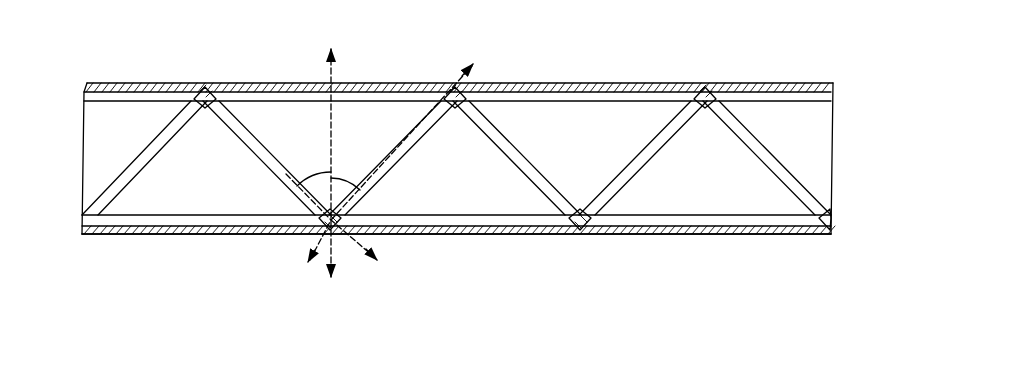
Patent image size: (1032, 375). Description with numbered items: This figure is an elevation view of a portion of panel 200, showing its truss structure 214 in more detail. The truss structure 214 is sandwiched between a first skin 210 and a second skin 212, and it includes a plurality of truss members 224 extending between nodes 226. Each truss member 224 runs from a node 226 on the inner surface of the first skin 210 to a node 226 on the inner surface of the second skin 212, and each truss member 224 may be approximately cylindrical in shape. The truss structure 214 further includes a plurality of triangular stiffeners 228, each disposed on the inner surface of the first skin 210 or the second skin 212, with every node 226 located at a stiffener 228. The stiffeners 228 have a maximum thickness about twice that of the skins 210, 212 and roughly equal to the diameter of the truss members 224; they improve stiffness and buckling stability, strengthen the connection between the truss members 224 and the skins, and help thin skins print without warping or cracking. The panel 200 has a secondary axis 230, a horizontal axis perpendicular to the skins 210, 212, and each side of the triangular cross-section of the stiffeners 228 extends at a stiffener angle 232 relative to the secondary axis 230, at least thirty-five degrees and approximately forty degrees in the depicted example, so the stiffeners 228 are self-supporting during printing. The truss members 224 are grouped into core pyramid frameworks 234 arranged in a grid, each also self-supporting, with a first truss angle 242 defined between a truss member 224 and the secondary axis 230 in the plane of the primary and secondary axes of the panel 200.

The panel 200 is at (112, 51).
The first skin 210 is at (778, 236).
The second skin 212 is at (779, 88).
The truss structure 214 is at (824, 161).
The truss members 224 is at (528, 170).
The nodes 226 is at (220, 79).
The triangular stiffeners 228 is at (617, 90).
The secondary axis 230 is at (334, 71).
The stiffener angle 232 is at (294, 170).
The core pyramid frameworks 234 is at (181, 248).
The first truss angle 242 is at (348, 177).